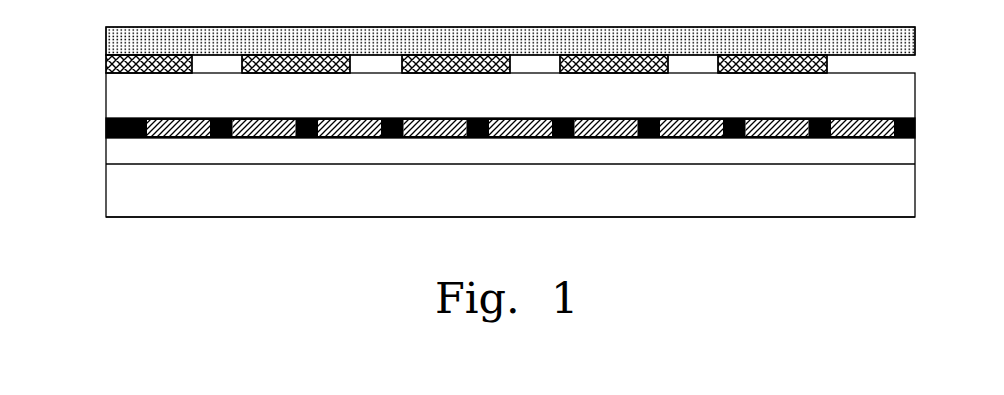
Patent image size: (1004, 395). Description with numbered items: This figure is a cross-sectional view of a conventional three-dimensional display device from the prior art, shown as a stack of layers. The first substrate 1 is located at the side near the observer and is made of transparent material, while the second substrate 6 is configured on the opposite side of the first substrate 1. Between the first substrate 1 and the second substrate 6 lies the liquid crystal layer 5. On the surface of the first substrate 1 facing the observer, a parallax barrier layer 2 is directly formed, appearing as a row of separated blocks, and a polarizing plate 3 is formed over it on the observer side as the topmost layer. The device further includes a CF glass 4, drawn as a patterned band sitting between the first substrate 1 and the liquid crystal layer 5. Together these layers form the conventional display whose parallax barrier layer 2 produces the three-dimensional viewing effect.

The first substrate 1 is at (915, 90).
The parallax barrier layer 2 is at (827, 62).
The polarizing plate 3 is at (115, 41).
The CF glass 4 is at (870, 128).
The liquid crystal layer 5 is at (117, 150).
The second substrate 6 is at (900, 194).